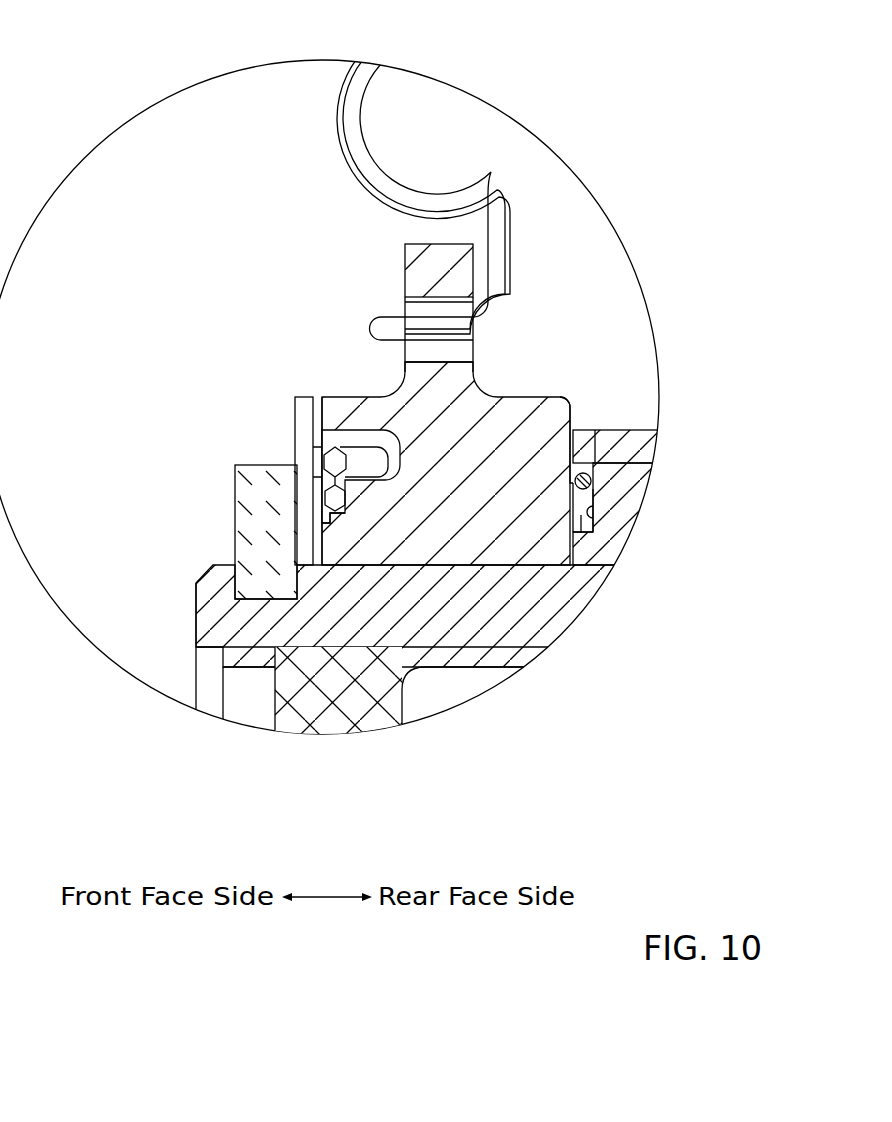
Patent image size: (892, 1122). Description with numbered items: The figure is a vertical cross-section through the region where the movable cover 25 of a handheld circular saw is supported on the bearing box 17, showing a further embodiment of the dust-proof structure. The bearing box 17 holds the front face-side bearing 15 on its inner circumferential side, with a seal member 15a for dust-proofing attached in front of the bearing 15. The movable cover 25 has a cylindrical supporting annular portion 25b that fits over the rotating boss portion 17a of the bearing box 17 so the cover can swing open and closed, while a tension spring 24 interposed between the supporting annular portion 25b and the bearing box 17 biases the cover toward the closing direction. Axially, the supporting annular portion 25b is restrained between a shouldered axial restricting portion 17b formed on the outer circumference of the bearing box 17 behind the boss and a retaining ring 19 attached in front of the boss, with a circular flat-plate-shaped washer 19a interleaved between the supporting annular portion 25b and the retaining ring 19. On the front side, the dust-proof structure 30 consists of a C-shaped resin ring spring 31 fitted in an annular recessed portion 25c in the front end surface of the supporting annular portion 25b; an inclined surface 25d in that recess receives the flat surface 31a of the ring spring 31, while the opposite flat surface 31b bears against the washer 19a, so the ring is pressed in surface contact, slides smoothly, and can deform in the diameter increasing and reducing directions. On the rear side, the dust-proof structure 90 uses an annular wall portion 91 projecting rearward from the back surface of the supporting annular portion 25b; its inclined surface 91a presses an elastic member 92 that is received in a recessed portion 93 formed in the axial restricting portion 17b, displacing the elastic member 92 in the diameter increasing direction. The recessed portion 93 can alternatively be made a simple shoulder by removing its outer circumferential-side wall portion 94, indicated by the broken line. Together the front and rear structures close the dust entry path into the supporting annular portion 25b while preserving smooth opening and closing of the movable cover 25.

The front face-side bearing 15 is at (430, 690).
The seal member 15a is at (312, 712).
The bearing box 17 is at (228, 616).
The rotating boss portion 17a is at (556, 408).
The axial restricting portion 17b is at (622, 470).
The retaining ring 19 is at (245, 483).
The washer 19a is at (300, 424).
The tension spring 24 is at (347, 108).
The movable cover 25 is at (499, 308).
The supporting annular portion 25b is at (508, 412).
The recessed portion 25c is at (385, 457).
The inclined surface 25d is at (348, 490).
The dust-proof structure 30 is at (266, 388).
The ring spring 31 is at (340, 462).
The flat surface 31a is at (393, 440).
The flat surface 31b is at (313, 462).
The dust-proof structure 90 is at (610, 348).
The annular wall portion 91 is at (590, 536).
The inclined surface 91a is at (598, 513).
The elastic member 92 is at (592, 478).
The recessed portion 93 is at (592, 527).
The outer circumferential-side wall portion 94 is at (583, 447).